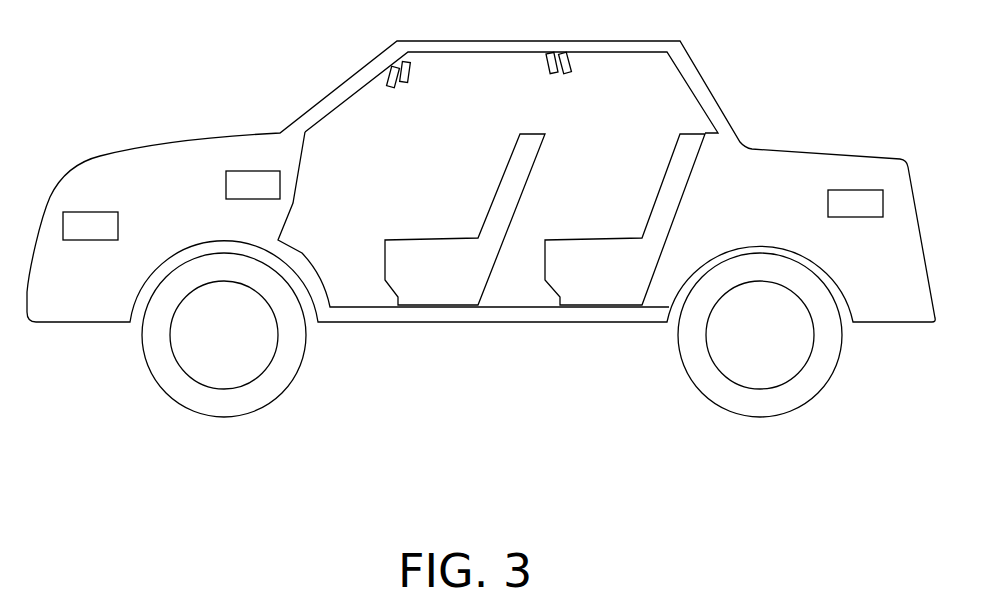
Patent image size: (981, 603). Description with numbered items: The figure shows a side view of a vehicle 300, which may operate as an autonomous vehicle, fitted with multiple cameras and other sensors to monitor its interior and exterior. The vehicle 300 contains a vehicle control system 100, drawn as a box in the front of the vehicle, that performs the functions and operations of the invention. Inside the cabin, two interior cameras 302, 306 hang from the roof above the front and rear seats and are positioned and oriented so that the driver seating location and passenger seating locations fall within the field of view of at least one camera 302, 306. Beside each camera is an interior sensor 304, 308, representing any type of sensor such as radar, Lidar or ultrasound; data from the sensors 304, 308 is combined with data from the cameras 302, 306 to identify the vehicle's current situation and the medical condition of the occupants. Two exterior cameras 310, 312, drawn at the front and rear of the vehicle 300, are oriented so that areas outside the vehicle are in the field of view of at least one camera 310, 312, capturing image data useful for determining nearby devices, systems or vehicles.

The vehicle control system 100 is at (262, 171).
The vehicle 300 is at (185, 142).
The interior camera 302 is at (391, 88).
The interior sensor 304 is at (412, 66).
The interior camera 306 is at (553, 73).
The interior sensor 308 is at (572, 62).
The exterior camera 310 is at (90, 212).
The exterior camera 312 is at (847, 190).